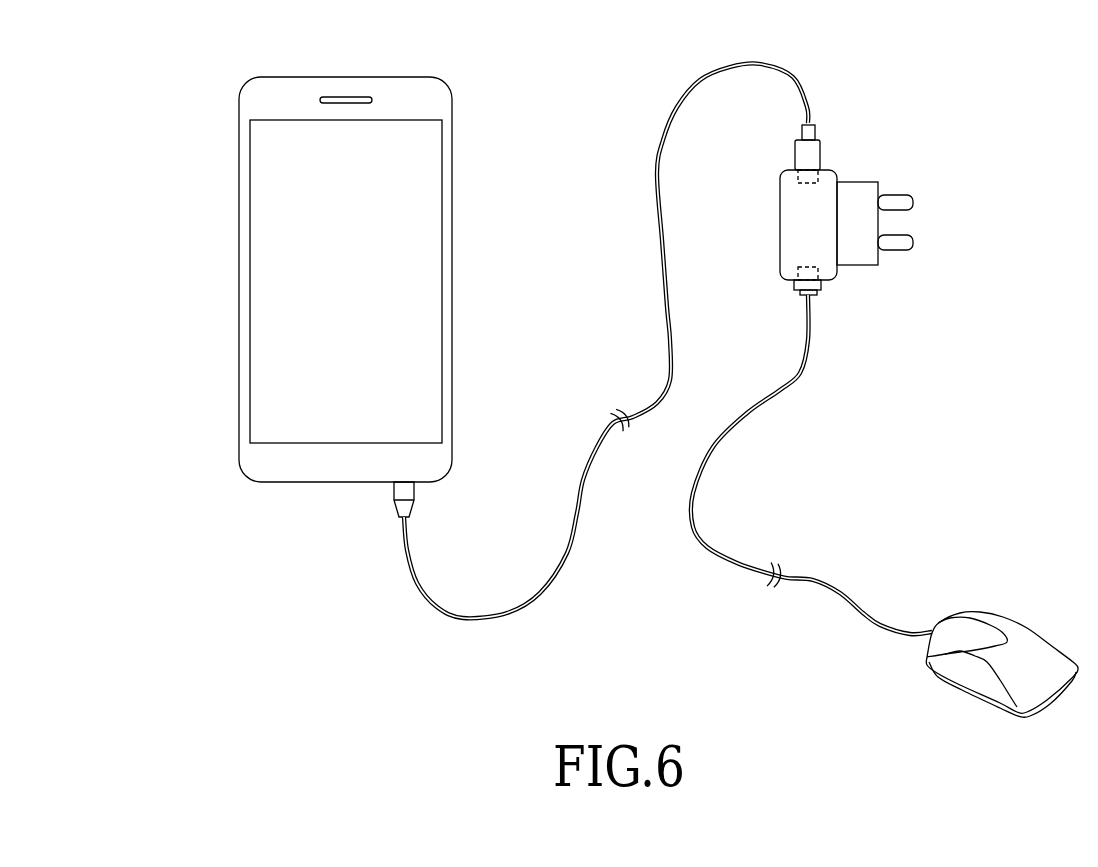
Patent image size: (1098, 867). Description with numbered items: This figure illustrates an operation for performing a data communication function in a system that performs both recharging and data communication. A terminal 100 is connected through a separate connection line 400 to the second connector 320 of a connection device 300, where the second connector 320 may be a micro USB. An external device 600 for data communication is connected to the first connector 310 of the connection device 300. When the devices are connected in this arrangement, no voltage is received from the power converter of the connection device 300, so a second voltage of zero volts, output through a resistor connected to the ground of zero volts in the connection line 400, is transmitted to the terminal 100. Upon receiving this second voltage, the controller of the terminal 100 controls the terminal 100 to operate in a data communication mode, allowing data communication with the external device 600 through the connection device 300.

The terminal 100 is at (452, 281).
The connection device 300 is at (812, 210).
The first connector 310 is at (792, 274).
The second connector 320 is at (788, 172).
The connection line 400 is at (721, 70).
The external device 600 is at (1004, 616).